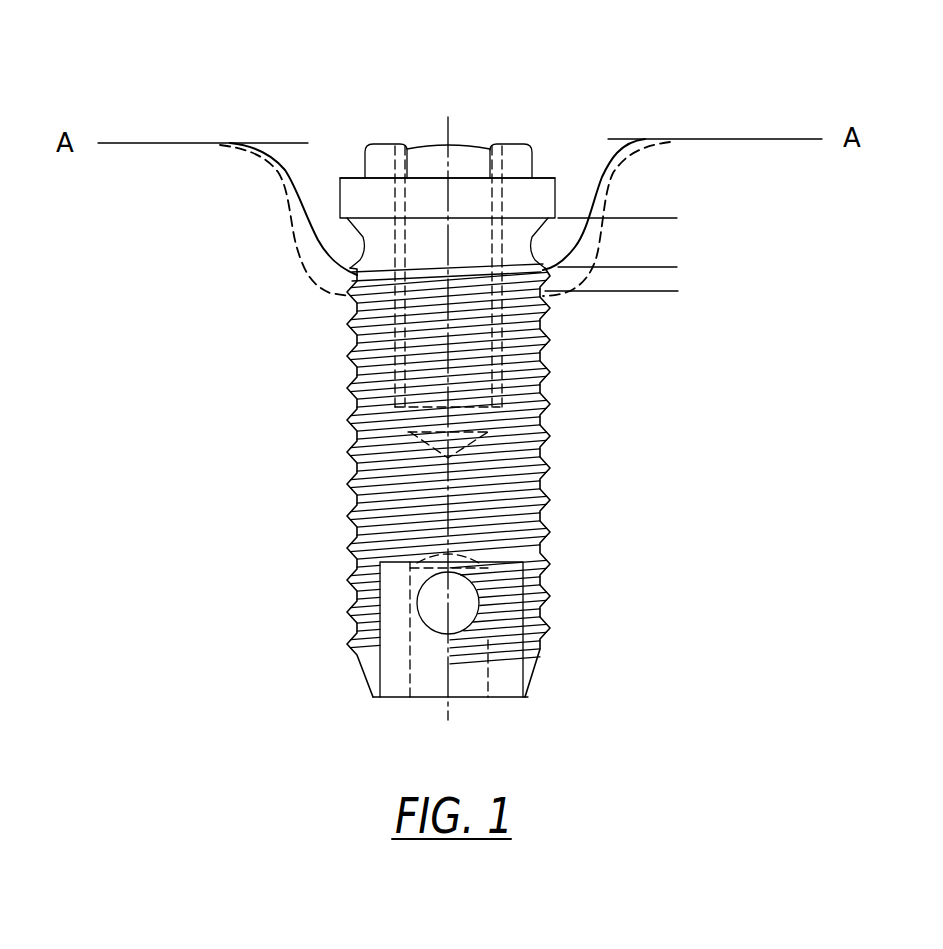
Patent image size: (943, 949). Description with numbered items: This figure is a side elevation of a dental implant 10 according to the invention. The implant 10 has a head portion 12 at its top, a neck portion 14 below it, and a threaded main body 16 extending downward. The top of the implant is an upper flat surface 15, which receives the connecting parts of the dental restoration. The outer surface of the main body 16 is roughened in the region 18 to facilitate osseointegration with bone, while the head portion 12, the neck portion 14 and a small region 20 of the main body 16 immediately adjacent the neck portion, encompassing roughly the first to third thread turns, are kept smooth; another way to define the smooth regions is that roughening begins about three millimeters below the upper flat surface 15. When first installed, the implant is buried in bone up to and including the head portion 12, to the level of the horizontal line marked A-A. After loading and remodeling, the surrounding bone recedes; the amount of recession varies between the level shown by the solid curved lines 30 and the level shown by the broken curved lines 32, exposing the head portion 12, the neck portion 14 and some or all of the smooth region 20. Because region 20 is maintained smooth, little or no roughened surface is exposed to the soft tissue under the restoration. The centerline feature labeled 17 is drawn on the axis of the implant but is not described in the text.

The implant 10 is at (310, 518).
The head portion 12 is at (560, 214).
The neck portion 14 is at (677, 218).
The upper flat surface 15 is at (358, 177).
The main body 16 is at (553, 432).
The axial bore 17 is at (466, 142).
The region 18 is at (532, 538).
The region 20 is at (655, 277).
The solid curved lines 30 is at (293, 170).
The broken curved lines 32 is at (290, 223).